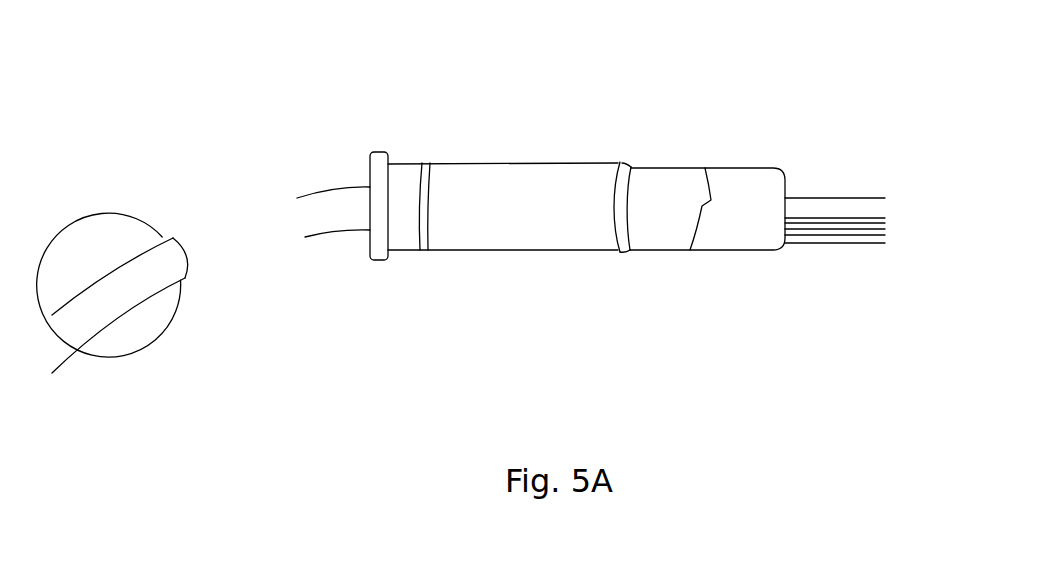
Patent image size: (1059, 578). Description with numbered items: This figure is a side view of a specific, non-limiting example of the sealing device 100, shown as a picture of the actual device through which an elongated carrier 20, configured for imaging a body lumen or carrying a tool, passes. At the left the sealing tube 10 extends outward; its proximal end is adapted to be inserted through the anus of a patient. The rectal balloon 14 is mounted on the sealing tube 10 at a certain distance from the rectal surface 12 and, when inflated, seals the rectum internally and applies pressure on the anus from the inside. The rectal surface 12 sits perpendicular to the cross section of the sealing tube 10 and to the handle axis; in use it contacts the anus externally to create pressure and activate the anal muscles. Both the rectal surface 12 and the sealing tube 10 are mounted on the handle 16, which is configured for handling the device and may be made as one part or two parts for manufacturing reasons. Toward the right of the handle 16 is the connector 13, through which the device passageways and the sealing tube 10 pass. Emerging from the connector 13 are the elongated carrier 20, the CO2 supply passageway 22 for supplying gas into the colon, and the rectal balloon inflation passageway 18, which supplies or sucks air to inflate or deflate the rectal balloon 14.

The sealing device 100 is at (597, 123).
The sealing tube 10 is at (135, 275).
The rectal balloon 14 is at (239, 278).
The rectal surface 12 is at (380, 182).
The handle 16 is at (508, 233).
The connector 13 is at (760, 232).
The elongated carrier 20 is at (823, 202).
The CO2 supply passageway 22 is at (830, 228).
The rectal balloon inflation passageway 18 is at (857, 243).